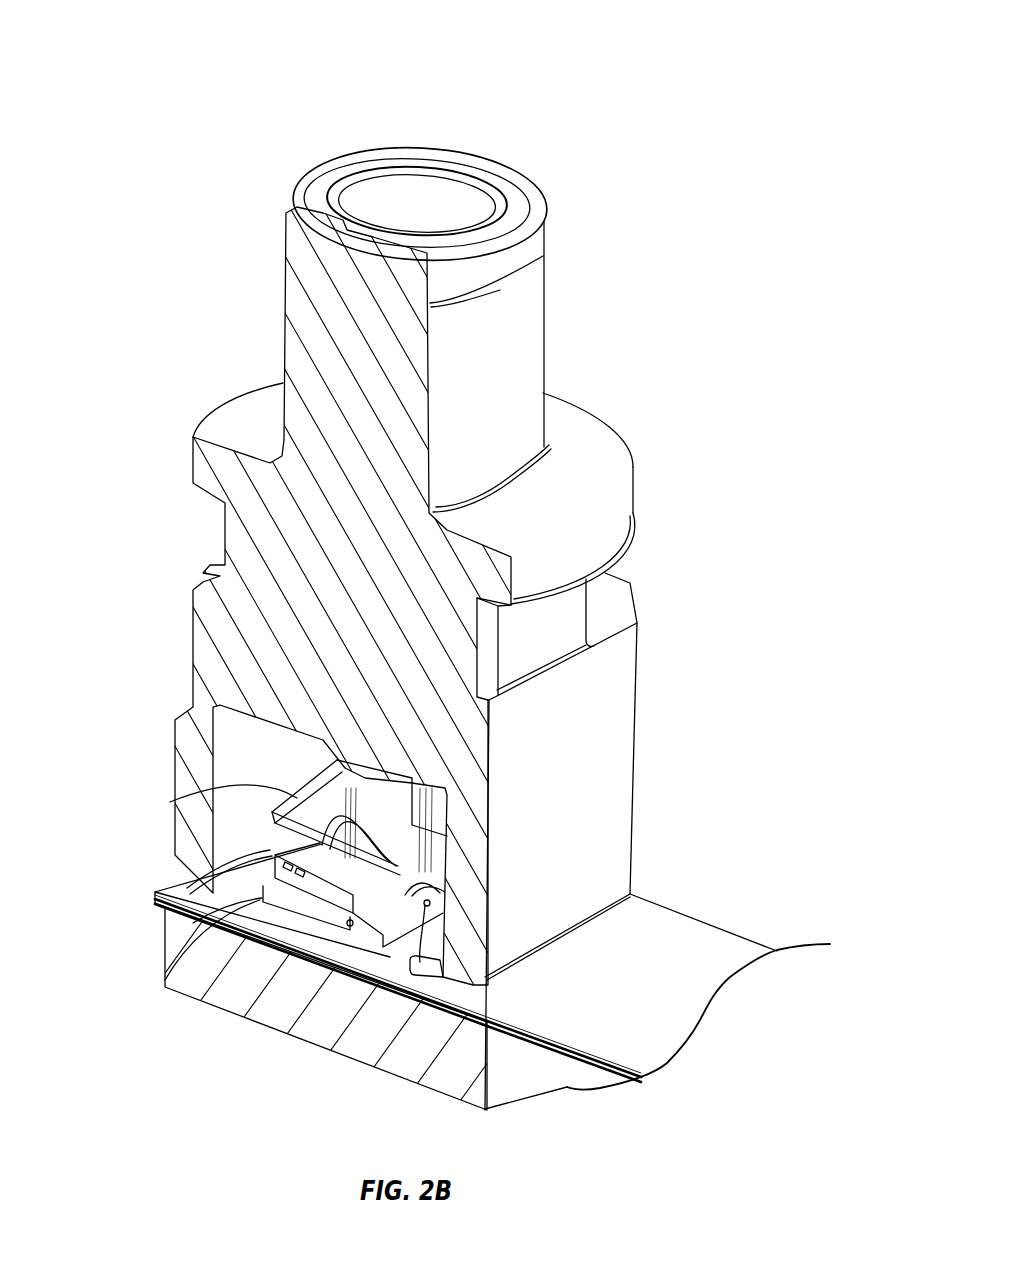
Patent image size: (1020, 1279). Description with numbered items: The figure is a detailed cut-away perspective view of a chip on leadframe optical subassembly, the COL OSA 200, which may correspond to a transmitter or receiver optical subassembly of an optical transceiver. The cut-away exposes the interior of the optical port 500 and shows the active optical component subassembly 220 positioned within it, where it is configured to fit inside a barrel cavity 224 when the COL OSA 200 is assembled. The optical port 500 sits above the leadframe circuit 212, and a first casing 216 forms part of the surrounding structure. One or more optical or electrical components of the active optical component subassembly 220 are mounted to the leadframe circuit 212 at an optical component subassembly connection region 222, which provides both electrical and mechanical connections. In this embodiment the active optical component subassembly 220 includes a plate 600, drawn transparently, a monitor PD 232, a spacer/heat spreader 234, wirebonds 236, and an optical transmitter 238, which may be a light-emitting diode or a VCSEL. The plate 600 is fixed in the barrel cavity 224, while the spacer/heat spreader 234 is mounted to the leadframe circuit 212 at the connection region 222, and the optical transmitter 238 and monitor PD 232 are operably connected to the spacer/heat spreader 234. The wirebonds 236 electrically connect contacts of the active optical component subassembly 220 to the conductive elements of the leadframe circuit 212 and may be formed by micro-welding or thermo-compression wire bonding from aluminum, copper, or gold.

The COL OSA 200 is at (713, 61).
The leadframe circuit 212 is at (661, 989).
The first casing 216 is at (288, 1027).
The active optical component subassembly 220 is at (92, 895).
The optical component subassembly connection region 222 is at (410, 972).
The barrel cavity 224 is at (232, 752).
The monitor PD 232 is at (167, 925).
The spacer/heat spreader 234 is at (167, 952).
The wirebonds 236 is at (167, 980).
The optical transmitter 238 is at (157, 902).
The optical port 500 is at (578, 817).
The plate 600 is at (292, 797).